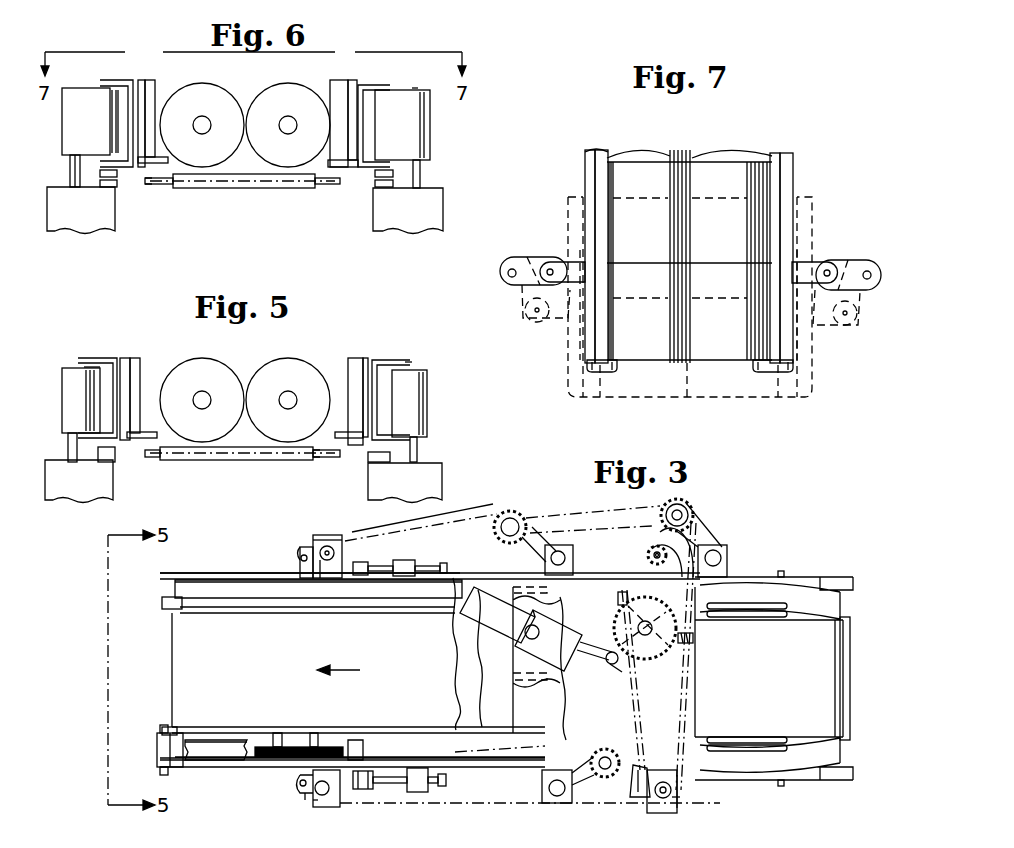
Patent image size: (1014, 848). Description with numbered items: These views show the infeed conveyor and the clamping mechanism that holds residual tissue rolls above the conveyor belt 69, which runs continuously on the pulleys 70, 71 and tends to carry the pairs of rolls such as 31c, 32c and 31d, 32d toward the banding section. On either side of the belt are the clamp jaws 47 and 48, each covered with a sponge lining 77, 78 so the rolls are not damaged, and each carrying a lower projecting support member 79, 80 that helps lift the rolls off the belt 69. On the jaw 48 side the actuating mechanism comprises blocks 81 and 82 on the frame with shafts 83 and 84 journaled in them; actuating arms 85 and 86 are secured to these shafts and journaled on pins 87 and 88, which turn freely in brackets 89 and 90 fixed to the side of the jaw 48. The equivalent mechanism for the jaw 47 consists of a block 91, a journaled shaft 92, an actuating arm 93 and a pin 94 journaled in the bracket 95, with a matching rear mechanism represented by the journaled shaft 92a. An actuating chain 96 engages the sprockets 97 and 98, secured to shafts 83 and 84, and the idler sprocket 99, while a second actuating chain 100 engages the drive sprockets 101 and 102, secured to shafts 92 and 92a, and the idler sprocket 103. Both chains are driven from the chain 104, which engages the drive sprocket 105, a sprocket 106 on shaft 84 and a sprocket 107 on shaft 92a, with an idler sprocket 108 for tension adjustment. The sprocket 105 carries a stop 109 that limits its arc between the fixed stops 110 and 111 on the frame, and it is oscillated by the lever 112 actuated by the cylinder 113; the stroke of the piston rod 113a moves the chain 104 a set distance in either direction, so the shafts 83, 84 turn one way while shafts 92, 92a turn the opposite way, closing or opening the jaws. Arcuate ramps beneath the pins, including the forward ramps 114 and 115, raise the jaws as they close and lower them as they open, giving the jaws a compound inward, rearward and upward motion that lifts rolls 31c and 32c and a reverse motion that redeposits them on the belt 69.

In FIG. 6, the tissue roll 31c is at (214, 111).
In FIG. 5, the tissue roll 31c is at (213, 388).
In FIG. 7, the tissue roll 31c is at (620, 329).
In FIG. 6, the tissue roll 32c is at (304, 111).
In FIG. 5, the tissue roll 32c is at (301, 388).
In FIG. 7, the tissue roll 32c is at (703, 329).
In FIG. 7, the lower roll 31d is at (620, 226).
In FIG. 7, the lower roll 32d is at (703, 226).
In FIG. 6, the clamp jaw 47 is at (140, 80).
In FIG. 5, the clamp jaw 47 is at (135, 358).
In FIG. 7, the clamp jaw 47 is at (587, 167).
In FIG. 3, the clamp jaw 47 is at (230, 578).
In FIG. 6, the clamp jaw 48 is at (355, 92).
In FIG. 5, the clamp jaw 48 is at (364, 358).
In FIG. 7, the clamp jaw 48 is at (792, 175).
In FIG. 3, the clamp jaw 48 is at (247, 763).
In FIG. 6, the conveyor belt 69 is at (270, 188).
In FIG. 5, the conveyor belt 69 is at (247, 462).
In FIG. 3, the conveyor belt 69 is at (247, 656).
In FIG. 3, the pulley 70 is at (850, 738).
In FIG. 6, the pulley 71 is at (165, 185).
In FIG. 5, the pulley 71 is at (320, 462).
In FIG. 3, the pulley 71 is at (158, 747).
In FIG. 6, the sponge lining 77 is at (150, 82).
In FIG. 5, the sponge lining 77 is at (143, 363).
In FIG. 7, the sponge lining 77 is at (598, 157).
In FIG. 3, the sponge lining 77 is at (162, 588).
In FIG. 6, the sponge lining 78 is at (335, 80).
In FIG. 5, the sponge lining 78 is at (347, 368).
In FIG. 7, the sponge lining 78 is at (780, 150).
In FIG. 3, the sponge lining 78 is at (210, 752).
In FIG. 6, the lower projecting support member 79 is at (150, 165).
In FIG. 5, the lower projecting support member 79 is at (133, 440).
In FIG. 7, the lower projecting support member 79 is at (613, 370).
In FIG. 3, the lower projecting support member 79 is at (165, 607).
In FIG. 6, the lower projecting support member 80 is at (345, 167).
In FIG. 5, the lower projecting support member 80 is at (360, 445).
In FIG. 7, the lower projecting support member 80 is at (762, 370).
In FIG. 3, the lower projecting support member 80 is at (167, 728).
In FIG. 6, the block 81 is at (420, 221).
In FIG. 5, the block 81 is at (417, 495).
In FIG. 3, the block 81 is at (326, 808).
In FIG. 3, the block 82 is at (676, 800).
In FIG. 6, the shaft 83 is at (422, 165).
In FIG. 5, the shaft 83 is at (420, 447).
In FIG. 7, the shaft 83 is at (867, 280).
In FIG. 3, the shaft 83 is at (307, 808).
In FIG. 3, the shaft 84 is at (662, 803).
In FIG. 6, the actuating arm 85 is at (385, 132).
In FIG. 5, the actuating arm 85 is at (428, 395).
In FIG. 7, the actuating arm 85 is at (853, 263).
In FIG. 3, the actuating arm 85 is at (305, 796).
In FIG. 3, the actuating arm 86 is at (650, 797).
In FIG. 6, the pin 87 is at (412, 90).
In FIG. 5, the pin 87 is at (410, 363).
In FIG. 7, the pin 87 is at (826, 267).
In FIG. 3, the pin 87 is at (300, 790).
In FIG. 3, the pin 88 is at (633, 793).
In FIG. 6, the bracket 89 is at (388, 83).
In FIG. 5, the bracket 89 is at (383, 360).
In FIG. 7, the bracket 89 is at (798, 260).
In FIG. 3, the bracket 89 is at (298, 776).
In FIG. 3, the bracket 90 is at (642, 773).
In FIG. 6, the block 91 is at (50, 220).
In FIG. 5, the block 91 is at (50, 493).
In FIG. 3, the block 91 is at (333, 535).
In FIG. 6, the journaled shaft 92 is at (70, 163).
In FIG. 5, the journaled shaft 92 is at (68, 447).
In FIG. 7, the journaled shaft 92 is at (512, 285).
In FIG. 3, the journaled shaft 92 is at (330, 560).
In FIG. 3, the journaled shaft 92a is at (655, 560).
In FIG. 6, the actuating arm 93 is at (75, 124).
In FIG. 5, the actuating arm 93 is at (65, 392).
In FIG. 7, the actuating arm 93 is at (535, 260).
In FIG. 3, the actuating arm 93 is at (320, 540).
In FIG. 6, the pin 94 is at (112, 90).
In FIG. 5, the pin 94 is at (82, 366).
In FIG. 7, the pin 94 is at (552, 268).
In FIG. 3, the pin 94 is at (302, 550).
In FIG. 6, the bracket 95 is at (112, 80).
In FIG. 5, the bracket 95 is at (102, 358).
In FIG. 7, the bracket 95 is at (580, 247).
In FIG. 3, the bracket 95 is at (300, 560).
In FIG. 3, the actuating chain 96 is at (402, 800).
In FIG. 3, the sprocket 97 is at (340, 784).
In FIG. 3, the sprocket 98 is at (683, 797).
In FIG. 3, the idler sprocket 99 is at (578, 765).
In FIG. 3, the second actuating chain 100 is at (522, 508).
In FIG. 3, the drive sprocket 101 is at (343, 558).
In FIG. 3, the drive sprocket 102 is at (647, 553).
In FIG. 3, the idler sprocket 103 is at (530, 543).
In FIG. 3, the chain 104 is at (624, 708).
In FIG. 3, the drive sprocket 105 is at (647, 662).
In FIG. 3, the sprocket 106 is at (683, 787).
In FIG. 3, the sprocket 107 is at (665, 540).
In FIG. 3, the idler sprocket 108 is at (695, 512).
In FIG. 3, the stop 109 is at (728, 564).
In FIG. 3, the fixed stop 110 is at (618, 597).
In FIG. 3, the fixed stop 111 is at (695, 636).
In FIG. 3, the lever 112 is at (612, 670).
In FIG. 3, the cylinder 113 is at (513, 638).
In FIG. 3, the piston rod 113a is at (560, 633).
In FIG. 6, the forward ramp 114 is at (390, 188).
In FIG. 5, the forward ramp 114 is at (378, 467).
In FIG. 6, the forward ramp 115 is at (103, 195).
In FIG. 5, the forward ramp 115 is at (105, 462).